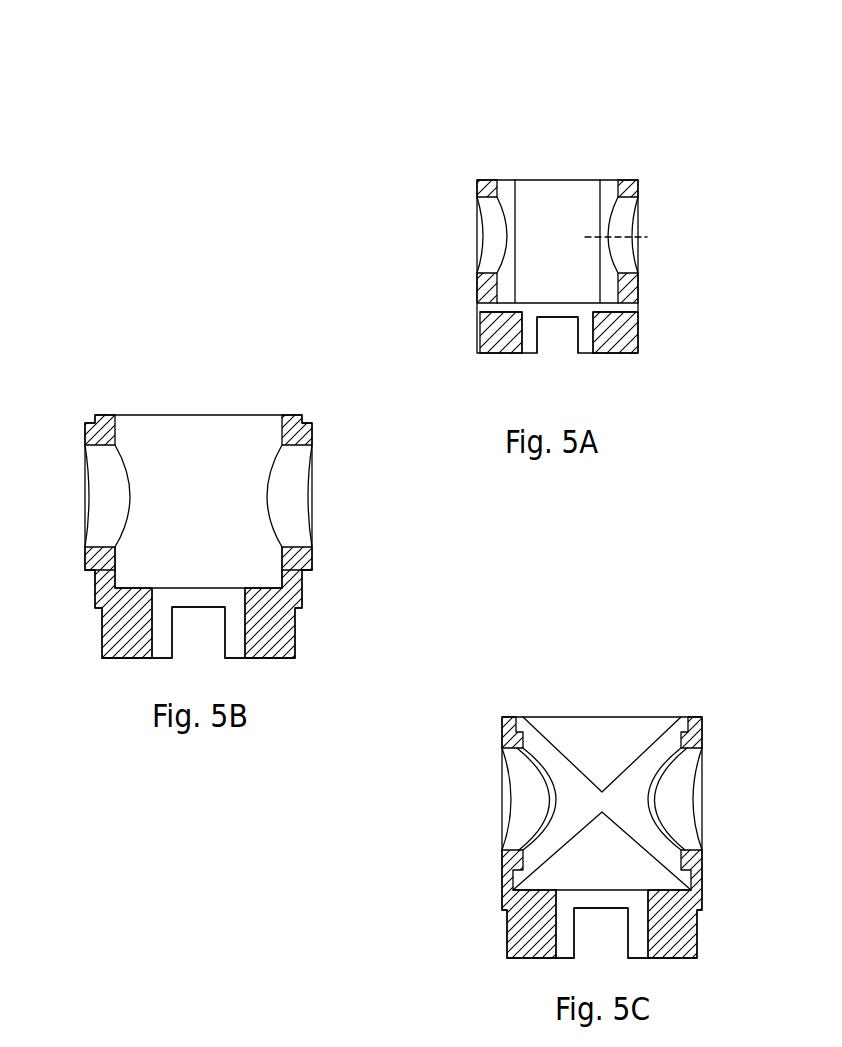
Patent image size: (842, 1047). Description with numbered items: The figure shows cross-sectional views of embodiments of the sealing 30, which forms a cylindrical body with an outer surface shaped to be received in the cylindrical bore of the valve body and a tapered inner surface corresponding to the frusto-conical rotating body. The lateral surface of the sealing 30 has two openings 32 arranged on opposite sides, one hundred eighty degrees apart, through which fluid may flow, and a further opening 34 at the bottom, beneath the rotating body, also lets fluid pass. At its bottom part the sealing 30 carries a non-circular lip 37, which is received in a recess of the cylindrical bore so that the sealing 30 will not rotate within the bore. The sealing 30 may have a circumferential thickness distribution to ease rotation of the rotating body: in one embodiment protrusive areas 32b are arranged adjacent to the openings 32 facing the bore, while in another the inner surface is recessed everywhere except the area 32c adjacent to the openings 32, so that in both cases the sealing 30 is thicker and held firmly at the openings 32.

In FIG. 5A, the sealing 30 is at (637, 180).
In FIG. 5B, the sealing 30 is at (290, 415).
In FIG. 5C, the sealing 30 is at (693, 717).
In FIG. 5A, the opening 32 is at (478, 210).
In FIG. 5B, the opening 32 is at (108, 493).
In FIG. 5C, the opening 32 is at (515, 793).
In FIG. 5B, the protrusive area 32b is at (83, 428).
In FIG. 5C, the area adjacent to the openings 32c is at (533, 740).
In FIG. 5A, the opening 34 is at (560, 322).
In FIG. 5B, the opening 34 is at (198, 620).
In FIG. 5C, the opening 34 is at (597, 919).
In FIG. 5A, the lip 37 is at (642, 342).
In FIG. 5B, the lip 37 is at (308, 643).
In FIG. 5C, the lip 37 is at (708, 945).